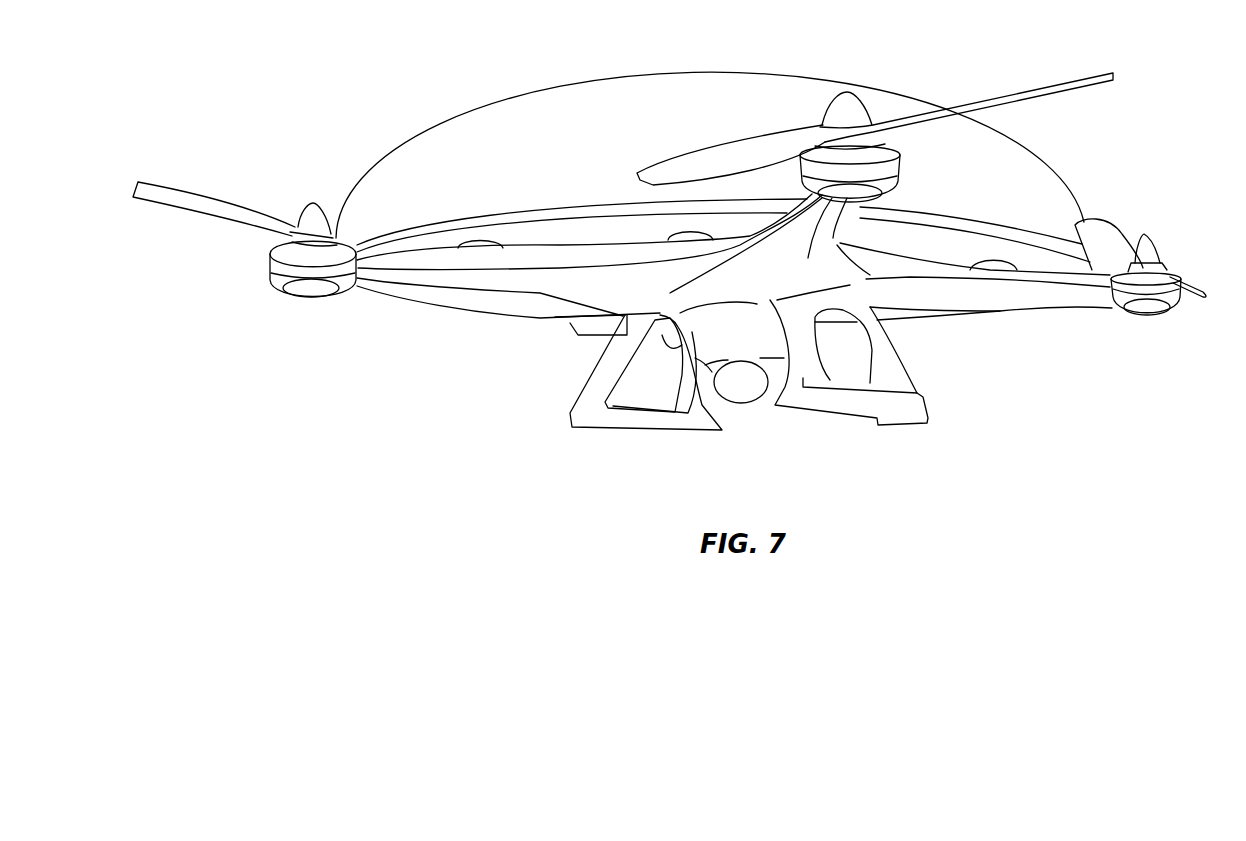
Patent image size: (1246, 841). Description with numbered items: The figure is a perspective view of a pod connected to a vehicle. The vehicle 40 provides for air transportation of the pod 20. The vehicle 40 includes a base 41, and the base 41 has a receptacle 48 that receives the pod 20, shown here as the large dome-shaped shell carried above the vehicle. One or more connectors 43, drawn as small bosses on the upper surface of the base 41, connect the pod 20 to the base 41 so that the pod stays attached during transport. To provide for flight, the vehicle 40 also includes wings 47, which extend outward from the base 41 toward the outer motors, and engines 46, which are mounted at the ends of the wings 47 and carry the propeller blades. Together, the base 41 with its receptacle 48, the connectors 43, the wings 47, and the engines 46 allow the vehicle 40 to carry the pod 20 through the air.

The pod 20 is at (480, 107).
The vehicle 40 is at (457, 417).
The base 41 is at (521, 270).
The connectors 43 is at (480, 245).
The engines 46 is at (268, 266).
The wings 47 is at (437, 270).
The receptacle 48 is at (593, 228).